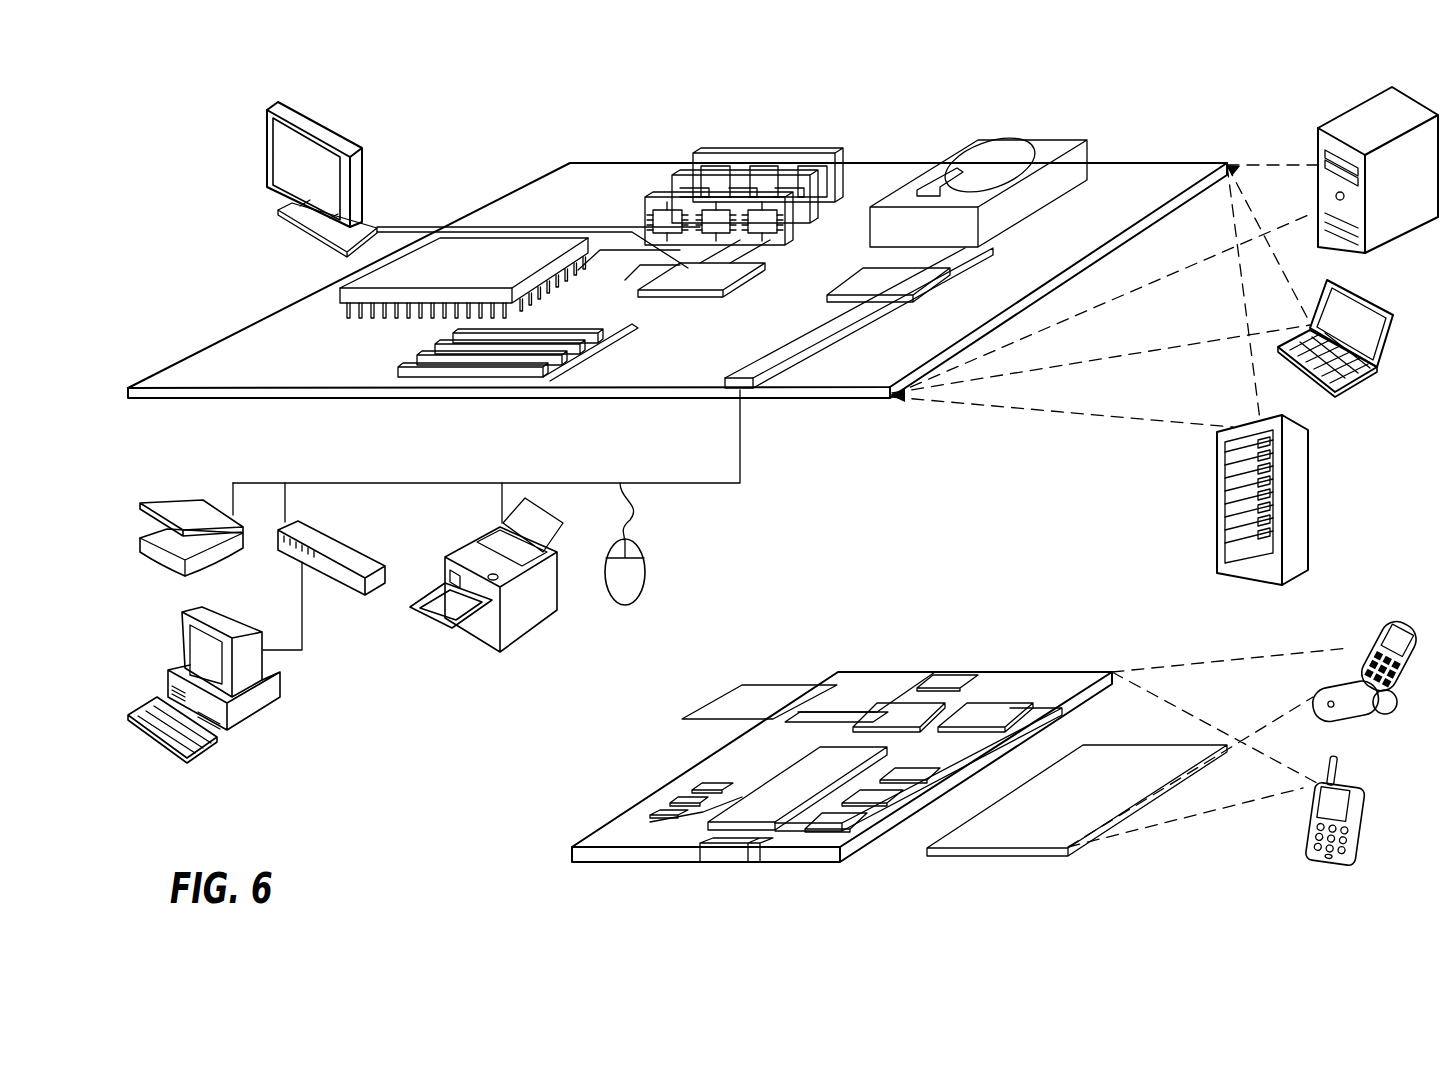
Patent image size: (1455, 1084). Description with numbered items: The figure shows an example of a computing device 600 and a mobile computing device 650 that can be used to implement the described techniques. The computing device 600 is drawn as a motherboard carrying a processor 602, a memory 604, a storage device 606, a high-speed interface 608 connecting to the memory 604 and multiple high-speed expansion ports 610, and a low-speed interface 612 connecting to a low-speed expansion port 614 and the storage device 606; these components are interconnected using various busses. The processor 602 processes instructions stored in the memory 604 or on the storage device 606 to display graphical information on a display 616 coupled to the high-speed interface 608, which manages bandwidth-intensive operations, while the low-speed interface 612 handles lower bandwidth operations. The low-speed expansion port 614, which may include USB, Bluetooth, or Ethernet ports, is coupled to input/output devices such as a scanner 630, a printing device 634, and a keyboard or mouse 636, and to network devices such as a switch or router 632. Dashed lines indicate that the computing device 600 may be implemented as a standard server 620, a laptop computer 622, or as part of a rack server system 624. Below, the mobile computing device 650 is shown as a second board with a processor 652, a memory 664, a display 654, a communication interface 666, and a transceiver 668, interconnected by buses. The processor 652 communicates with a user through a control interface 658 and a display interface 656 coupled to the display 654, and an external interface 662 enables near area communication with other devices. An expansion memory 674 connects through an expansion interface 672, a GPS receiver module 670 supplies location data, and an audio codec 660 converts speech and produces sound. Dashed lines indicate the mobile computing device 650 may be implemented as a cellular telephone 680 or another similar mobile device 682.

The computing device 600 is at (481, 126).
The processor 602 is at (350, 295).
The memory 604 is at (705, 158).
The storage device 606 is at (978, 142).
The high-speed interface 608 is at (677, 278).
The high-speed expansion ports 610 is at (415, 358).
The low-speed interface 612 is at (870, 278).
The low-speed expansion port 614 is at (753, 390).
The display 616 is at (268, 103).
The standard server 620 is at (1318, 148).
The laptop computer 622 is at (1390, 313).
The rack server system 624 is at (1218, 527).
The scanner 630 is at (173, 500).
The switch or router 632 is at (347, 589).
The printing device 634 is at (530, 633).
The mouse 636 is at (645, 575).
The mobile computing device 650 is at (550, 855).
The processor 652 is at (767, 812).
The display 654 is at (1043, 838).
The display interface 656 is at (845, 820).
The control interface 658 is at (880, 797).
The audio codec 660 is at (907, 775).
The external interface 662 is at (728, 862).
The memory 664 is at (668, 805).
The communication interface 666 is at (898, 713).
The transceiver 668 is at (985, 708).
The GPS receiver module 670 is at (952, 680).
The expansion interface 672 is at (815, 685).
The expansion memory 674 is at (735, 686).
The cellular telephone 680 is at (1370, 620).
The handheld device 682 is at (1308, 822).